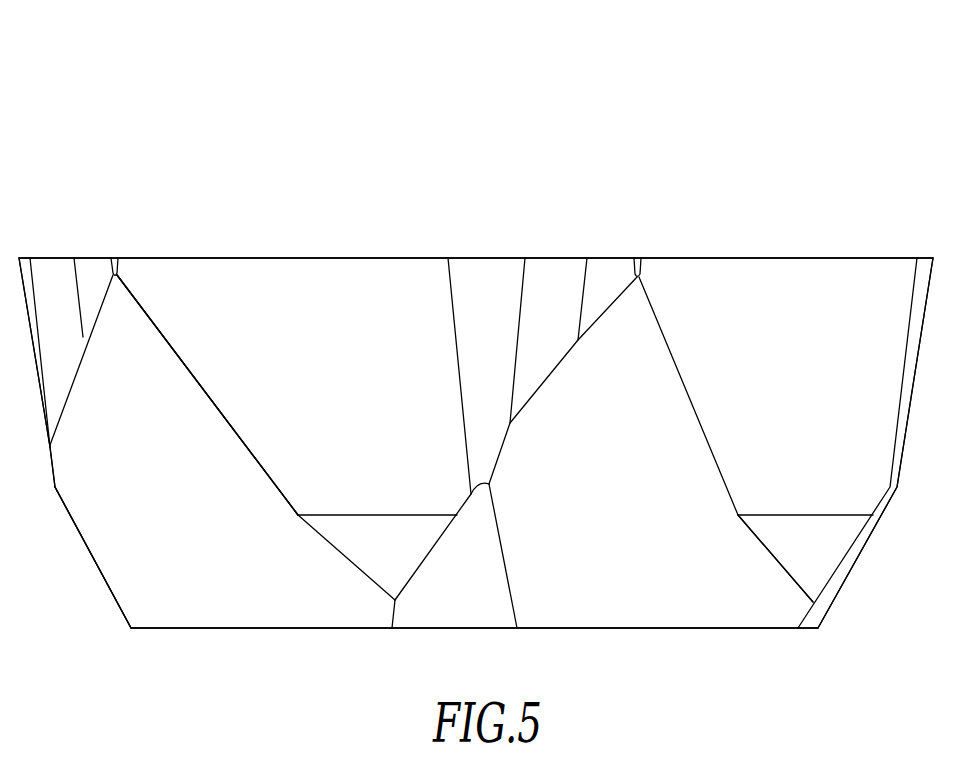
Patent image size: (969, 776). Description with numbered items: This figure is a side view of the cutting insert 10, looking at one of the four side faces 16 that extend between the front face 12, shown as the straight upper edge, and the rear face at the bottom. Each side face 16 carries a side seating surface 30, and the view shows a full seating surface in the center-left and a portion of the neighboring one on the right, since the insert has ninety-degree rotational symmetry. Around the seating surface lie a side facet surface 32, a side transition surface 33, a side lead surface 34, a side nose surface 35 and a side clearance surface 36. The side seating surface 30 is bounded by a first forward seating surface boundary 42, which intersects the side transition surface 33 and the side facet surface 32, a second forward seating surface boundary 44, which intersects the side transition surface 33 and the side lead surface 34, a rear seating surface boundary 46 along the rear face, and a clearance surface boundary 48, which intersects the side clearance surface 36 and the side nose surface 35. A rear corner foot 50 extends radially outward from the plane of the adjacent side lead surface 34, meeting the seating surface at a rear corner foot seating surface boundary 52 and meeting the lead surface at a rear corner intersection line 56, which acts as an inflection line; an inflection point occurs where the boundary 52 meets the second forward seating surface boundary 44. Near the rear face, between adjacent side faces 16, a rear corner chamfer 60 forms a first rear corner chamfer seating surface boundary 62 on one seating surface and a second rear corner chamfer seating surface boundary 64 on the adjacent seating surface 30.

The cutting insert 10 is at (222, 122).
The front face 12 is at (387, 258).
The side face 16 is at (287, 280).
The side seating surface 30 is at (148, 476).
The side facet surface 32 is at (92, 266).
The side transition surface 33 is at (115, 257).
The side lead surface 34 is at (190, 270).
The side nose surface 35 is at (487, 280).
The side clearance surface 36 is at (553, 280).
The first forward seating surface boundary 42 is at (100, 308).
The second forward seating surface boundary 44 is at (230, 423).
The rear seating surface boundary 46 is at (260, 628).
The clearance surface boundary 48 is at (73, 370).
The rear corner foot 50 is at (408, 530).
The rear corner foot seating surface boundary 52 is at (315, 527).
The rear corner intersection line 56 is at (340, 513).
The rear corner chamfer 60 is at (450, 597).
The first rear corner chamfer seating surface boundary 62 is at (392, 612).
The second rear corner chamfer seating surface boundary 64 is at (95, 555).